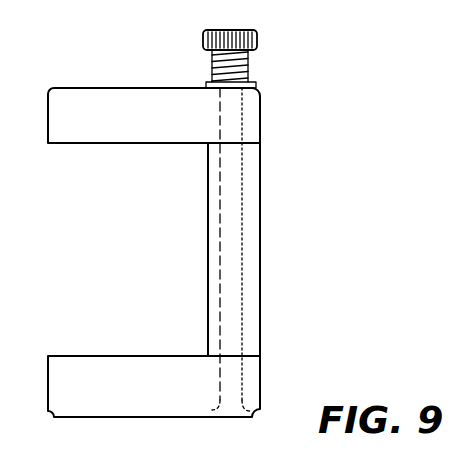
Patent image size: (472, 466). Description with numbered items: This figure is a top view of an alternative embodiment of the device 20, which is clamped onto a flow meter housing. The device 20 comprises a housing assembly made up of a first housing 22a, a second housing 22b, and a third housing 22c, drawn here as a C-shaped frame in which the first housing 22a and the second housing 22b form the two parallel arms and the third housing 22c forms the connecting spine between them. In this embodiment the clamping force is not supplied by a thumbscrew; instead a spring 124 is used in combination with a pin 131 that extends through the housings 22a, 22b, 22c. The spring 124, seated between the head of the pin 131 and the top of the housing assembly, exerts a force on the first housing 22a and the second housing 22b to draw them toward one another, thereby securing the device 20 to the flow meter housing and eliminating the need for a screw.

The device 20 is at (199, 269).
The first housing 22a is at (262, 118).
The second housing 22b is at (110, 418).
The third housing 22c is at (262, 245).
The spring 124 is at (250, 62).
The pin 131 is at (204, 37).